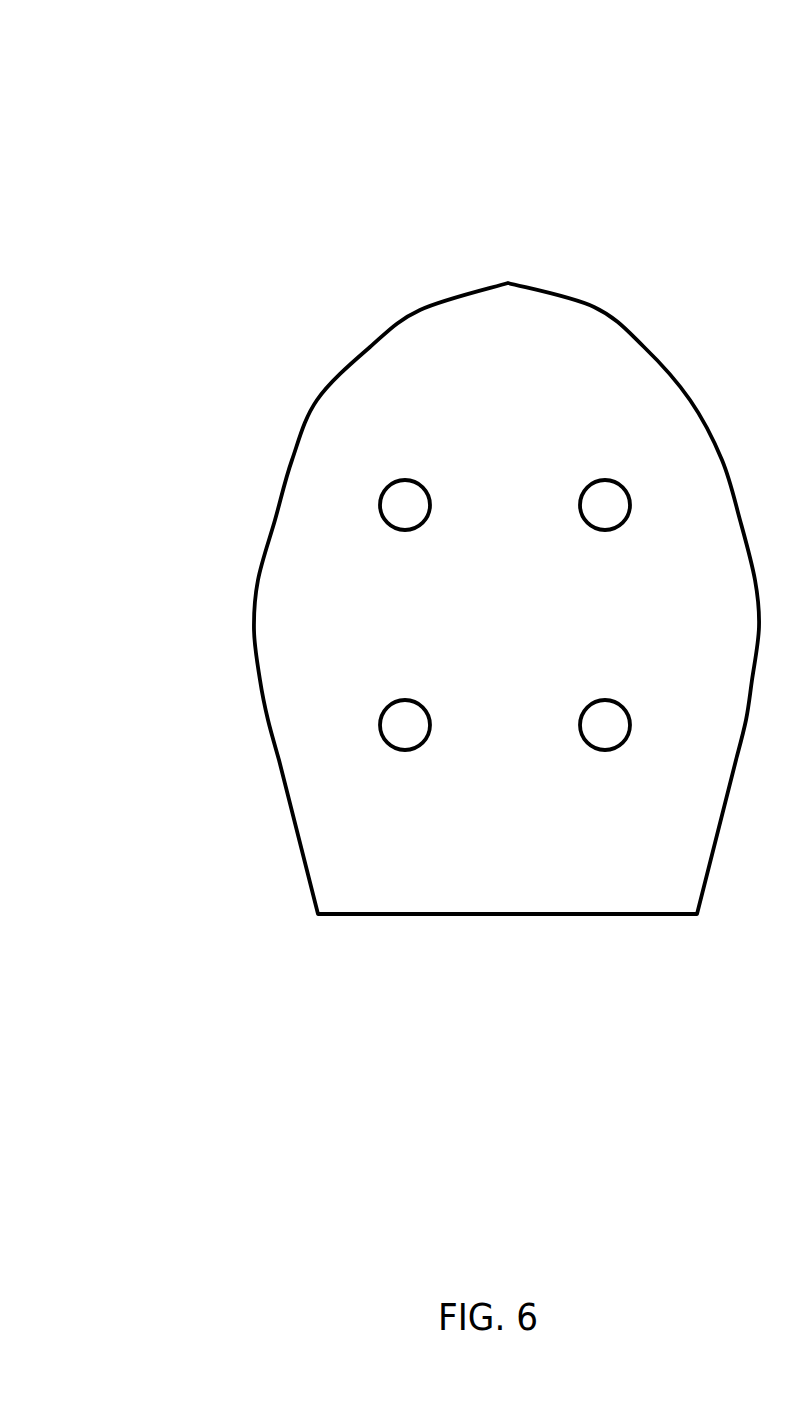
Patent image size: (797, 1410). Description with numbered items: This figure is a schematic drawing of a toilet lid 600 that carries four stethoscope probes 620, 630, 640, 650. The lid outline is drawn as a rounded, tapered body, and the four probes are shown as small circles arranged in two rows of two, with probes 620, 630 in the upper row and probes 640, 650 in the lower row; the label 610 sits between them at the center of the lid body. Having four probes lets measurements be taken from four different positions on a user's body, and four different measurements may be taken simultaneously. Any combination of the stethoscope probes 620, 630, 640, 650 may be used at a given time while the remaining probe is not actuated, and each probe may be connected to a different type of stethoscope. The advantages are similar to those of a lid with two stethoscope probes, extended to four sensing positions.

The toilet lid 600 is at (146, 73).
The pad base layer 610 is at (538, 586).
The stethoscope probe 620 is at (404, 481).
The stethoscope probe 630 is at (599, 481).
The stethoscope probe 640 is at (403, 701).
The stethoscope probe 650 is at (603, 701).